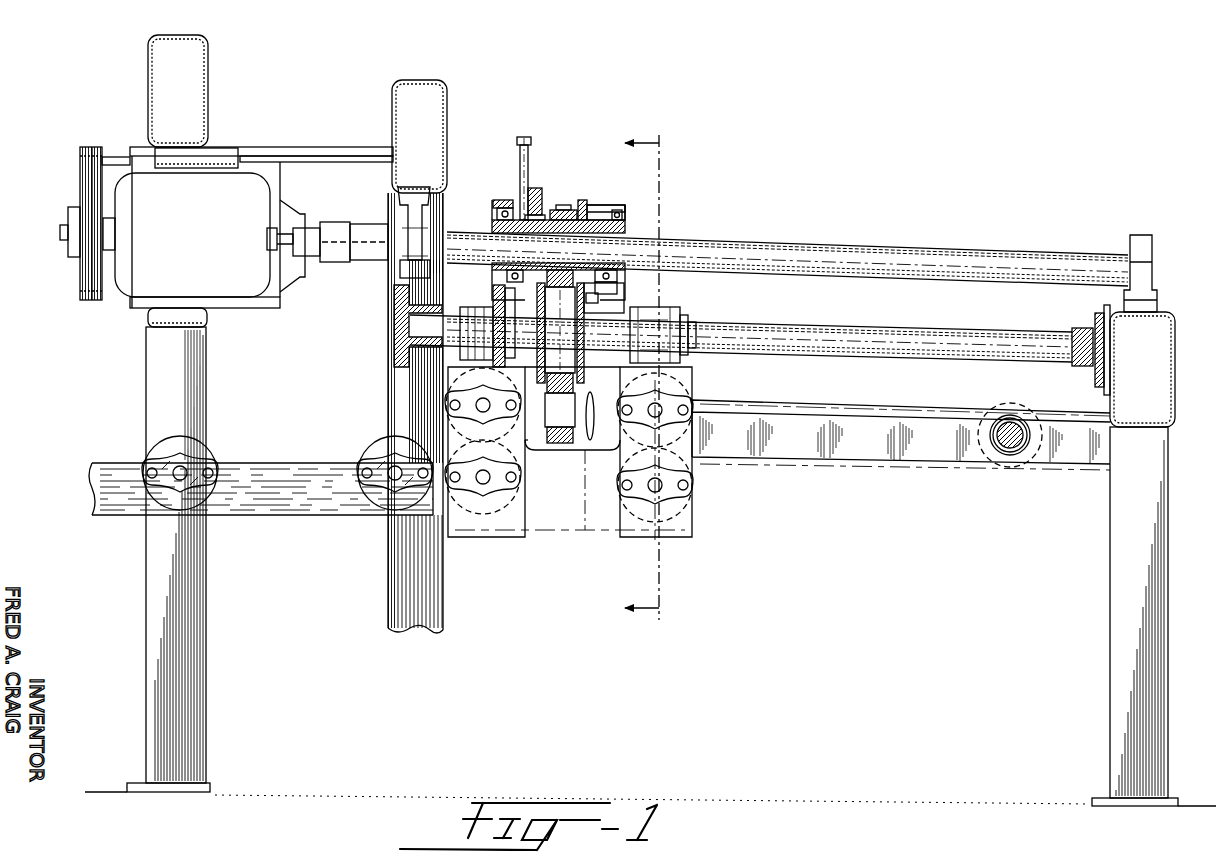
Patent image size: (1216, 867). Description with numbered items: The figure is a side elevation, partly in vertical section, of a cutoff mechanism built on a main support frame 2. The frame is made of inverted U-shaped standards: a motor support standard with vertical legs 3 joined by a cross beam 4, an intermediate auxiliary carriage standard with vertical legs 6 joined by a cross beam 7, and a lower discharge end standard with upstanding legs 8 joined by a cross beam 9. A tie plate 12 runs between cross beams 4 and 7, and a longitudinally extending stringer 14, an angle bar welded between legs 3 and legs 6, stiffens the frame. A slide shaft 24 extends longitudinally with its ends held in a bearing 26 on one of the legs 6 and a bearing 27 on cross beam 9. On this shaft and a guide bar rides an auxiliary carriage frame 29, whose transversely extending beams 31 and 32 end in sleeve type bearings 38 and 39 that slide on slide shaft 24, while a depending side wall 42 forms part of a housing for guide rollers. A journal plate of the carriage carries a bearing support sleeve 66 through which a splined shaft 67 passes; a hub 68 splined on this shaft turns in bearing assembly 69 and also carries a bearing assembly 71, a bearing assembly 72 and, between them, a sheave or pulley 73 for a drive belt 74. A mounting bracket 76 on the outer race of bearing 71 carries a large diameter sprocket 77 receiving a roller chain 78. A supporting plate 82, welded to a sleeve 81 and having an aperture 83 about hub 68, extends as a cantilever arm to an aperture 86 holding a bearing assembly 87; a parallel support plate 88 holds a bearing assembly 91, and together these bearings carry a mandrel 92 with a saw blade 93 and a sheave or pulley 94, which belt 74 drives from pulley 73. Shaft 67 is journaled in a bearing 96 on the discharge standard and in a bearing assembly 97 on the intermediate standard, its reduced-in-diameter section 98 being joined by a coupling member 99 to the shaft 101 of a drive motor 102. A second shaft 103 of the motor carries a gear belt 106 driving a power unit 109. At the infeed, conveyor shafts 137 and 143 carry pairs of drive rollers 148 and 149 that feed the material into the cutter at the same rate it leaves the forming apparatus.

The main support frame 2 is at (287, 66).
The vertical legs 3 is at (208, 396).
The cross beam 4 is at (210, 74).
The vertical legs 6 is at (388, 380).
The cross beam 7 is at (438, 99).
The vertically upstanding legs 8 is at (1170, 612).
The cross beam 9 is at (1166, 374).
The tie plate 12 is at (312, 147).
The longitudinally extending stringer 14 is at (1050, 466).
The slide shaft 24 is at (862, 348).
The bearing 26 is at (440, 300).
The bearing 27 is at (1082, 362).
The auxiliary carriage frame 29 is at (702, 510).
The transversely extending beam 31 is at (494, 297).
The transversely extending beam 32 is at (690, 374).
The sleeve type bearing 38 is at (488, 360).
The sleeve type bearing 39 is at (668, 314).
The depending side wall 42 is at (692, 474).
The bearing support sleeve 66 is at (497, 200).
The shaft 67 is at (862, 246).
The hub 68 is at (627, 230).
The bearing assembly 69 is at (490, 214).
The bearing assembly 71 is at (560, 210).
The bearing assembly 72 is at (622, 216).
The sheave or pulley 73 is at (608, 205).
The drive belt 74 is at (572, 208).
The mounting bracket 76 is at (537, 190).
The large diameter sprocket 77 is at (520, 182).
The roller chain 78 is at (527, 137).
The bearing sleeve 81 is at (602, 208).
The supporting plate 82 is at (582, 200).
The aperture 83 is at (606, 200).
The aperture 86 is at (642, 362).
The bearing assembly 87 is at (524, 378).
The support plate 88 is at (556, 320).
The bearing assembly 91 is at (518, 444).
The mandrel 92 is at (558, 442).
The saw blade 93 is at (592, 294).
The sheave or pulley 94 is at (592, 394).
The bearing 96 is at (1130, 240).
The bearing assembly 97 is at (392, 232).
The reduced-in-diameter section 98 is at (380, 264).
The coupling member 99 is at (336, 228).
The motor shaft 101 is at (284, 228).
The drive motor 102 is at (174, 246).
The second shaft 103 is at (60, 233).
The gear belt 106 is at (92, 147).
The power unit 109 is at (263, 310).
The shaft 137 is at (392, 500).
The shaft 143 is at (207, 461).
The drive rollers 148 is at (150, 458).
The drive rollers 149 is at (370, 458).